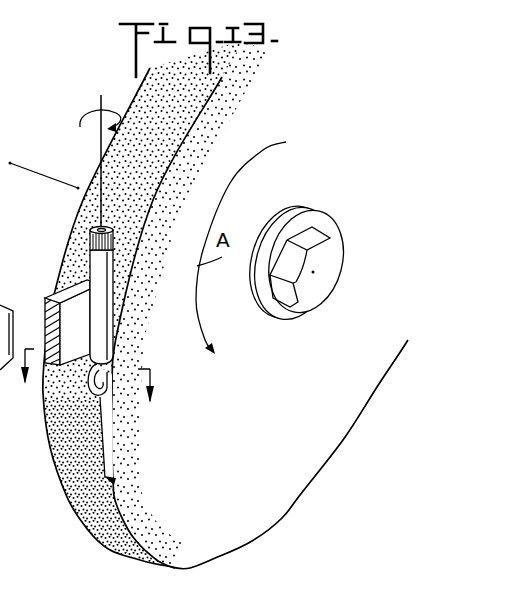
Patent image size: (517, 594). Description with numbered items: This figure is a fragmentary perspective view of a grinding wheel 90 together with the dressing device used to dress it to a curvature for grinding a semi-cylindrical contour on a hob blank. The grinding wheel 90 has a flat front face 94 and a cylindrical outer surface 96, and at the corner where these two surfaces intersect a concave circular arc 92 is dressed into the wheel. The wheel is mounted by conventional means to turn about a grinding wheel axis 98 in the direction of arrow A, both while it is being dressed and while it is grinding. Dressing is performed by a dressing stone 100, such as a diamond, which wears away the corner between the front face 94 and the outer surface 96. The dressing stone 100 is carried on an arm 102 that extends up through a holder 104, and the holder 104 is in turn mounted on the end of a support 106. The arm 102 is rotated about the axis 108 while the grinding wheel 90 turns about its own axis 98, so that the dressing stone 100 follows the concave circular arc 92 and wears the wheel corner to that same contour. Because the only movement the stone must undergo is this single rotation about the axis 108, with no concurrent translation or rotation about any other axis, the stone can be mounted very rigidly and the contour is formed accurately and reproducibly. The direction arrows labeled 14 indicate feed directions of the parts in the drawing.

The feed direction arrows 14 is at (82, 365).
The grinding wheel 90 is at (62, 493).
The concave circular arc 92 is at (100, 451).
The flat front face 94 is at (298, 497).
The cylindrical outer surface 96 is at (120, 538).
The grinding wheel axis 98 is at (320, 275).
The dressing stone 100 is at (113, 375).
The arm 102 is at (90, 390).
The holder 104 is at (97, 256).
The support 106 is at (49, 297).
The axis 108 is at (101, 152).